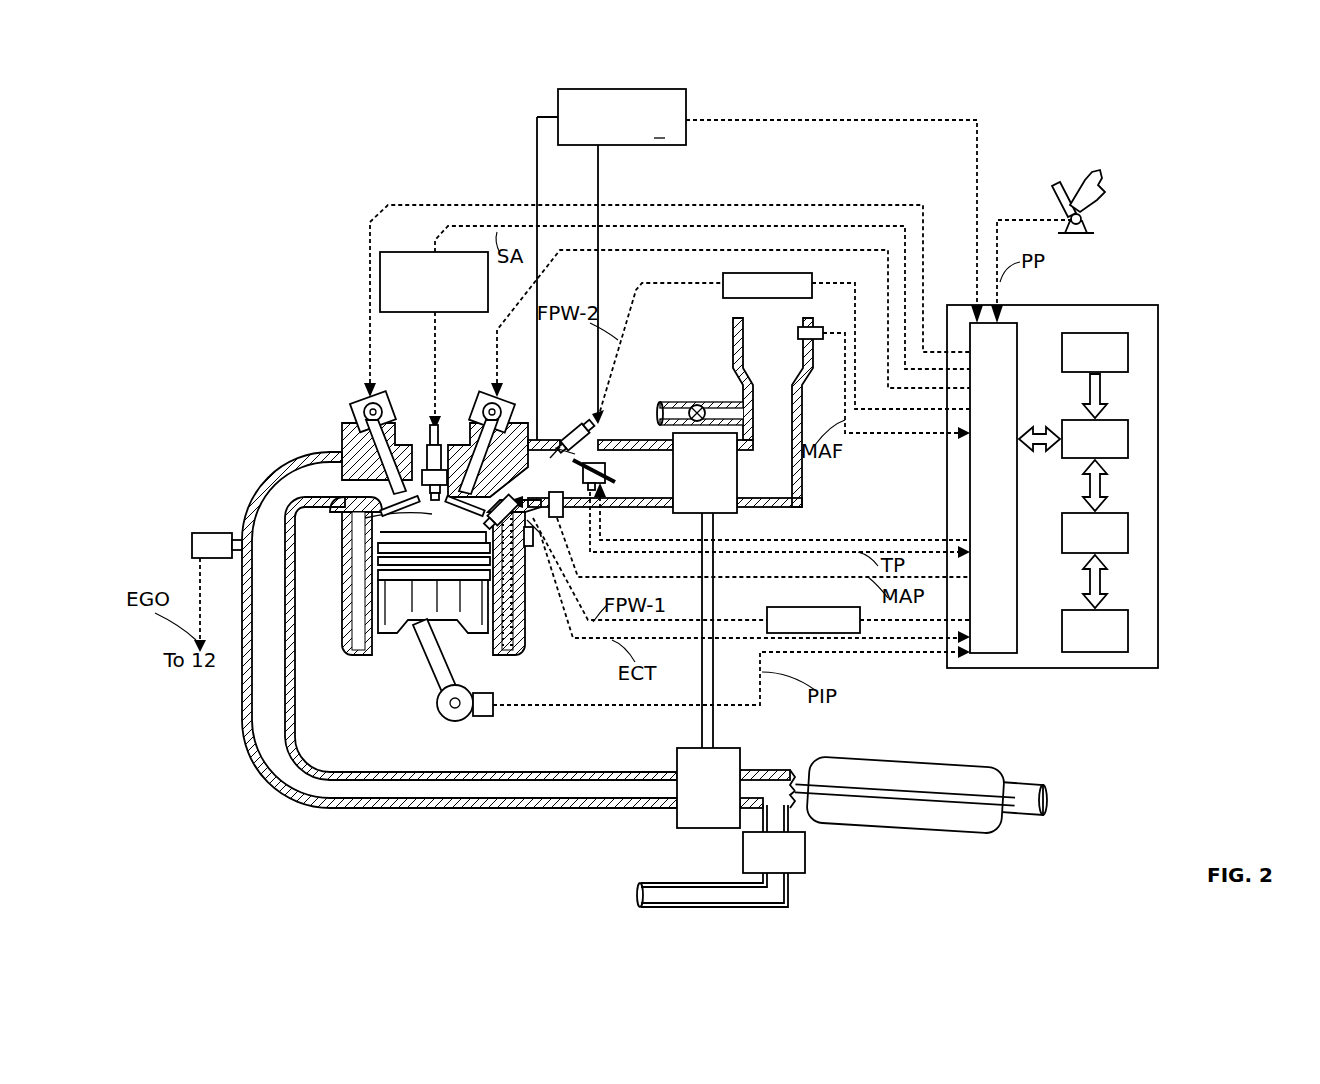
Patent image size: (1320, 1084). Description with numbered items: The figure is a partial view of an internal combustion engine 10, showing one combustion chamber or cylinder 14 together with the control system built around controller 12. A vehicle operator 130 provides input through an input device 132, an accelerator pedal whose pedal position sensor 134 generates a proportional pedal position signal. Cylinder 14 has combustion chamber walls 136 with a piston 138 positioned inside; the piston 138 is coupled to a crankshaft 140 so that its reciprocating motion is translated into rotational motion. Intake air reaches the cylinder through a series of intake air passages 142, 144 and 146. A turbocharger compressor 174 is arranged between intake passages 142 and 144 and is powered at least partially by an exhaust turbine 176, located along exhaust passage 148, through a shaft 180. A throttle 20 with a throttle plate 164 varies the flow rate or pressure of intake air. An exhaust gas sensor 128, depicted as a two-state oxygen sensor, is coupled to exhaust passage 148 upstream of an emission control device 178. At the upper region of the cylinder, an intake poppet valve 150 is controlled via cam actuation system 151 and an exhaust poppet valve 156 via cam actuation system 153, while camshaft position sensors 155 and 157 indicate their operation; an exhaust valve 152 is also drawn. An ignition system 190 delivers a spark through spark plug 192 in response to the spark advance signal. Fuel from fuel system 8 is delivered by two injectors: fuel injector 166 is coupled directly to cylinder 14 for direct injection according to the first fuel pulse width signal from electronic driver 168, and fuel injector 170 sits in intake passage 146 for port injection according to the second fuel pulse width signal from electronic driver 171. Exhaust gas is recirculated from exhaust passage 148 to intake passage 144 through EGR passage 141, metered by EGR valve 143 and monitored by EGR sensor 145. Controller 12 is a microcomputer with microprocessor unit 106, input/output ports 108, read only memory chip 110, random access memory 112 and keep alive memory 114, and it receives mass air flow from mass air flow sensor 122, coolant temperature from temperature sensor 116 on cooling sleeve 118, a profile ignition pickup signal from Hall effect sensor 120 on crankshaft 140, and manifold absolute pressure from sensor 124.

The fuel system 8 is at (611, 264).
The internal combustion engine 10 is at (290, 288).
The controller 12 is at (1155, 308).
The cylinder 14 is at (350, 535).
The throttle 20 is at (597, 462).
The microprocessor unit 106 is at (1128, 438).
The input/output ports 108 is at (1020, 330).
The read only memory chip 110 is at (1128, 348).
The random access memory 112 is at (1128, 535).
The keep alive memory 114 is at (1128, 628).
The temperature sensor 116 is at (530, 520).
The cooling sleeve 118 is at (502, 550).
The Hall effect sensor 120 is at (482, 718).
The mass air flow sensor 122 is at (816, 328).
The manifold absolute pressure sensor 124 is at (557, 519).
The exhaust gas sensor 128 is at (194, 540).
The vehicle operator 130 is at (1100, 190).
The input device 132 is at (1057, 200).
The pedal position sensor 134 is at (1085, 222).
The combustion chamber walls 136 is at (380, 645).
The piston 138 is at (418, 612).
The crankshaft 140 is at (443, 716).
The EGR passage 141 is at (693, 403).
The intake air passage 142 is at (773, 412).
The EGR valve 143 is at (700, 405).
The intake air passage 144 is at (665, 473).
The EGR sensor 145 is at (805, 862).
The intake air passage 146 is at (530, 478).
The exhaust passage 148 is at (516, 630).
The intake poppet valve 150 is at (468, 465).
The cam actuation system 151 is at (488, 398).
The exhaust valve 152 is at (399, 506).
The cam actuation system 153 is at (376, 398).
The camshaft position sensor 155 is at (520, 412).
The exhaust poppet valve 156 is at (380, 480).
The camshaft position sensor 157 is at (358, 408).
The throttle plate 164 is at (570, 450).
The fuel injector 166 is at (504, 502).
The electronic driver 168 is at (767, 608).
The fuel injector 170 is at (578, 428).
The electronic driver 171 is at (723, 285).
The compressor 174 is at (737, 513).
The exhaust turbine 176 is at (677, 825).
The emission control device 178 is at (895, 762).
The shaft 180 is at (713, 715).
The ignition system 190 is at (395, 252).
The spark plug 192 is at (426, 458).